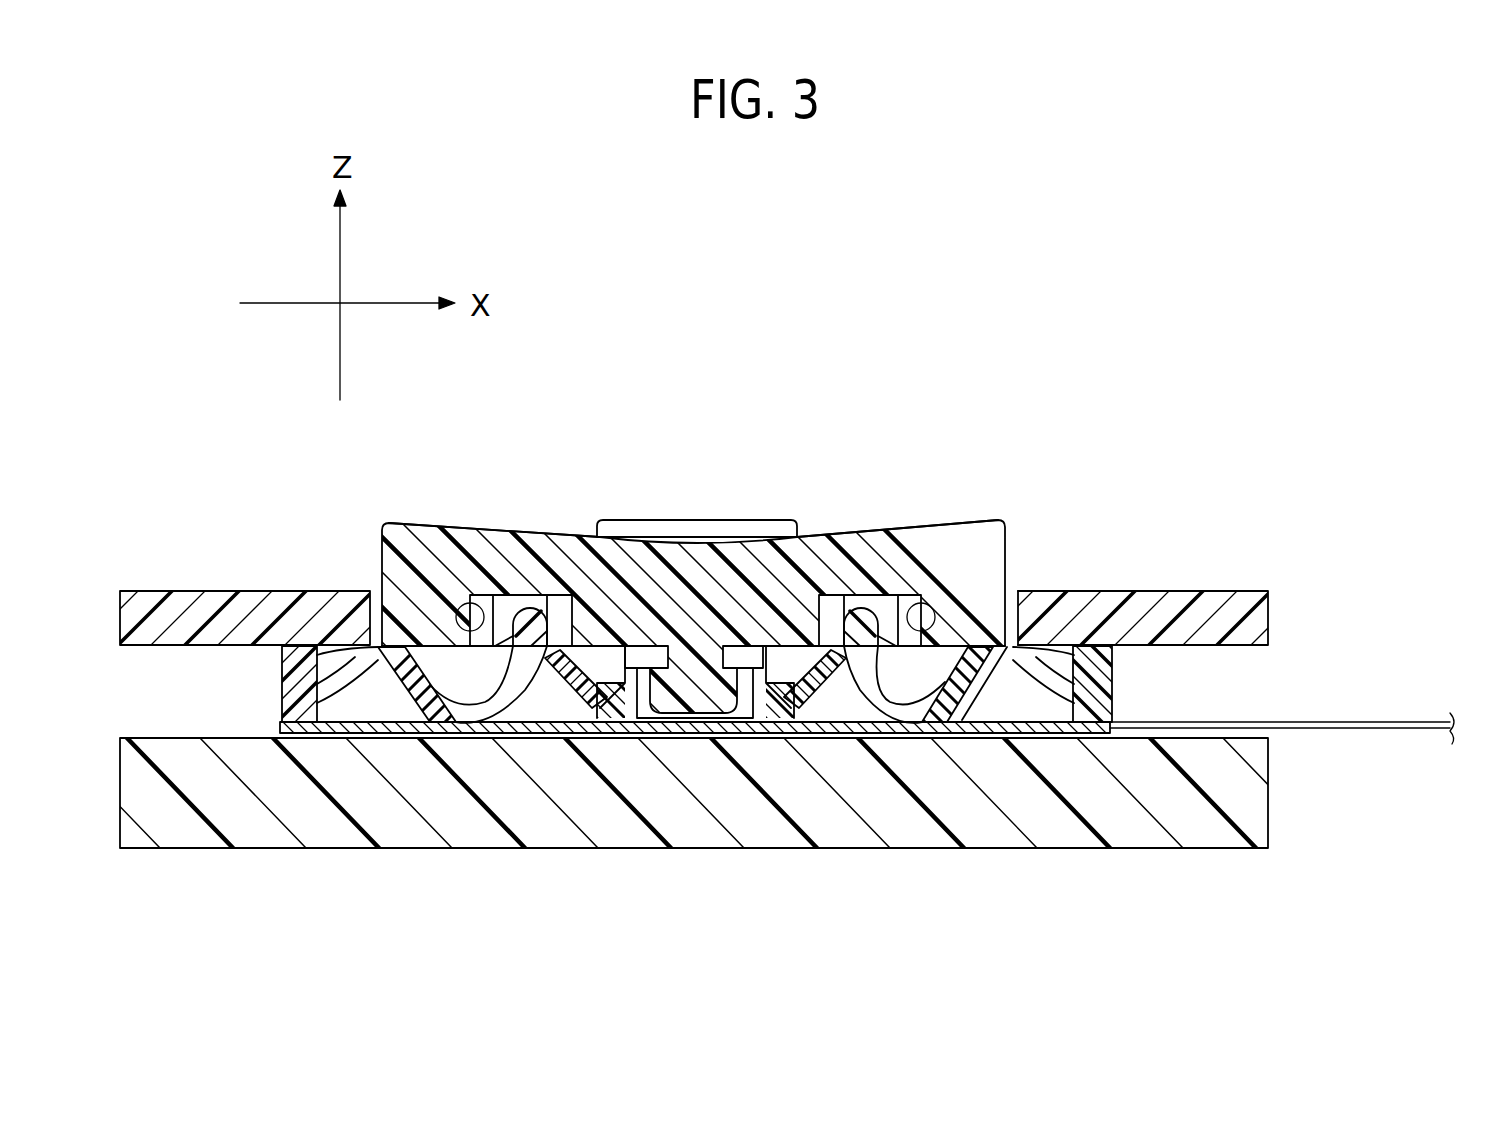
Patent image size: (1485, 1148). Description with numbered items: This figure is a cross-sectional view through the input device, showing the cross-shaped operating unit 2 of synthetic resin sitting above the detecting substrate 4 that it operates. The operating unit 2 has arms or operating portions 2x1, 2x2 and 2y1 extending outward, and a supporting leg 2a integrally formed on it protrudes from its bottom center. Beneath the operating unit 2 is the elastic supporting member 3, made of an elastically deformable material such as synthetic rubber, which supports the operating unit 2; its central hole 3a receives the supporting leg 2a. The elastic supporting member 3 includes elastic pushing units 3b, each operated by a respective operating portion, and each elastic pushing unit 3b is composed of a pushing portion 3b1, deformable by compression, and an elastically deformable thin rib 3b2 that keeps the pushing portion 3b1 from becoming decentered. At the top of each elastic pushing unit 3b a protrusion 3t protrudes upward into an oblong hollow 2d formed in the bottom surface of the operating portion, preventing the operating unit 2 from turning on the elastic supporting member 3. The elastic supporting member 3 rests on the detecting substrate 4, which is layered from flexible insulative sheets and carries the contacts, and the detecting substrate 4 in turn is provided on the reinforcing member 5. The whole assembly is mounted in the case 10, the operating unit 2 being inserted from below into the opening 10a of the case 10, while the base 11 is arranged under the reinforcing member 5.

The operating unit 2 is at (1012, 540).
The operating portion 2x2 is at (426, 540).
The operating portion 2x1 is at (910, 530).
The operating portion 2y1 is at (742, 518).
The oblong hollow 2d is at (455, 600).
The supporting leg 2a is at (713, 700).
The elastic supporting member 3 is at (1118, 683).
The hole 3a is at (682, 650).
The elastic pushing unit 3b is at (393, 697).
The pushing portion 3b1 is at (513, 690).
The thin rib 3b2 is at (575, 690).
The protrusion 3t is at (530, 605).
The detecting substrate 4 is at (1338, 718).
The reinforcing member 5 is at (278, 722).
The case 10 is at (1228, 587).
The opening 10a is at (1022, 608).
The base 11 is at (1272, 820).